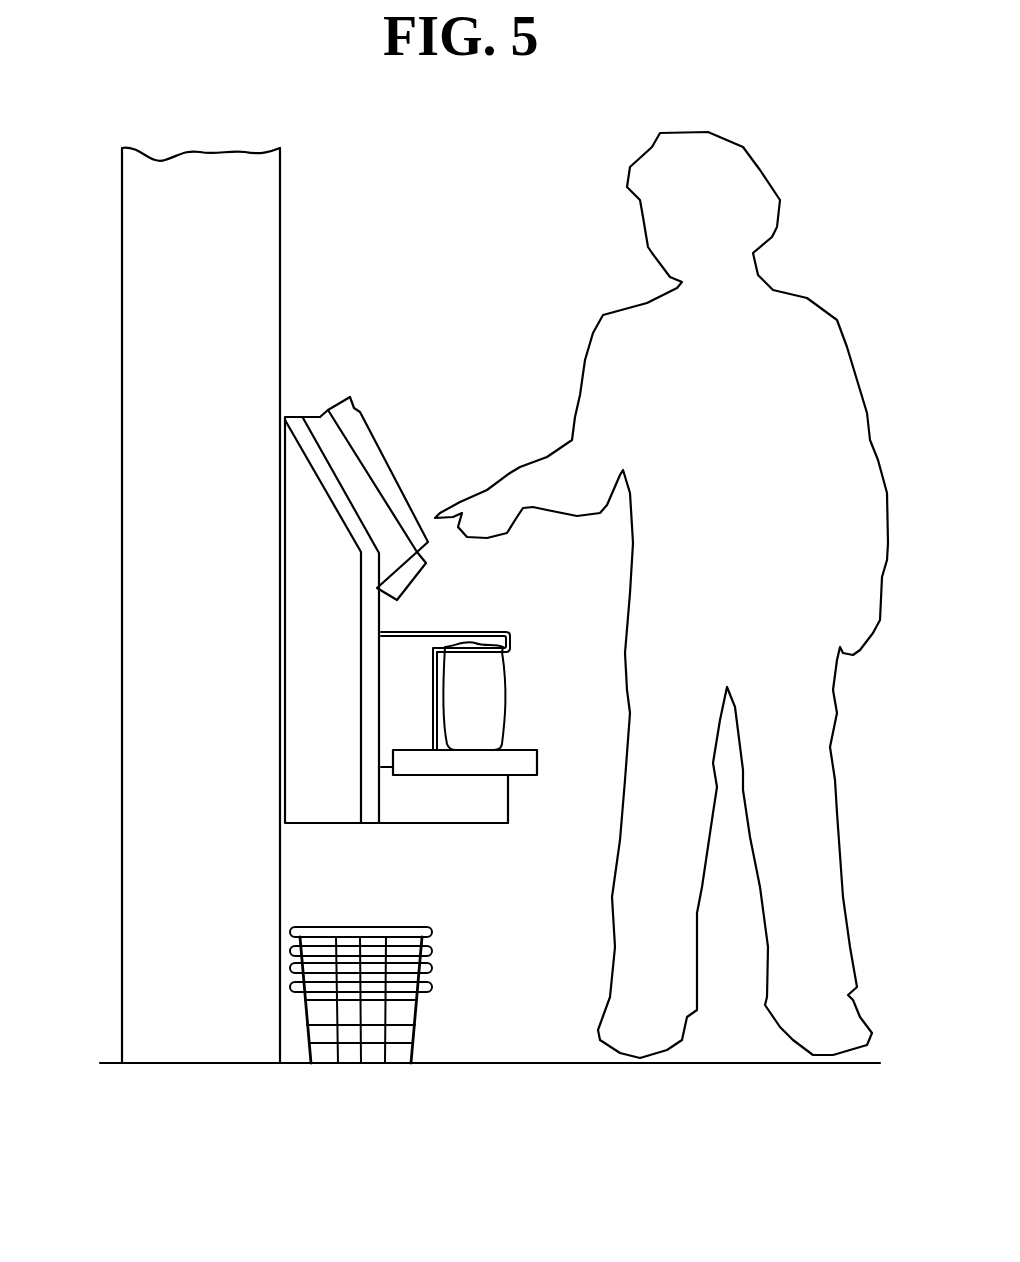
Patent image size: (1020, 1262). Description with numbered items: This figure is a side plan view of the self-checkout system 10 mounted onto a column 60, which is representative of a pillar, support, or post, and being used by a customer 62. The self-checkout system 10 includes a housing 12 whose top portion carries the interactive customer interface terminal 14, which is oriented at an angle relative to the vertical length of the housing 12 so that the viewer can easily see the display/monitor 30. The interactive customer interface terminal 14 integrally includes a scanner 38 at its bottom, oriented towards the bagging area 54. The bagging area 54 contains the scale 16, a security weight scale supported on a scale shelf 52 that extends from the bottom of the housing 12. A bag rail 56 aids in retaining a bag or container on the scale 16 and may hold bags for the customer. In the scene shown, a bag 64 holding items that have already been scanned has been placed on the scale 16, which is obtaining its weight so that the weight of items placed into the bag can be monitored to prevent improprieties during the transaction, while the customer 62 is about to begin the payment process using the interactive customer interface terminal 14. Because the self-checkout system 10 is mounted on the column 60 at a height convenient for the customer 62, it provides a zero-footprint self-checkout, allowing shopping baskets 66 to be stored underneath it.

The self-checkout system 10 is at (392, 275).
The housing 12 is at (312, 815).
The interactive customer interface terminal 14 is at (318, 416).
The scale 16 is at (518, 768).
The display/monitor 30 is at (405, 432).
The scanner 38 is at (415, 580).
The scale shelf 52 is at (435, 815).
The bagging area 54 is at (530, 717).
The bag rail 56 is at (502, 628).
The column 60 is at (122, 385).
The customer 62 is at (808, 297).
The bag 64 is at (494, 683).
The shopping baskets 66 is at (417, 1020).